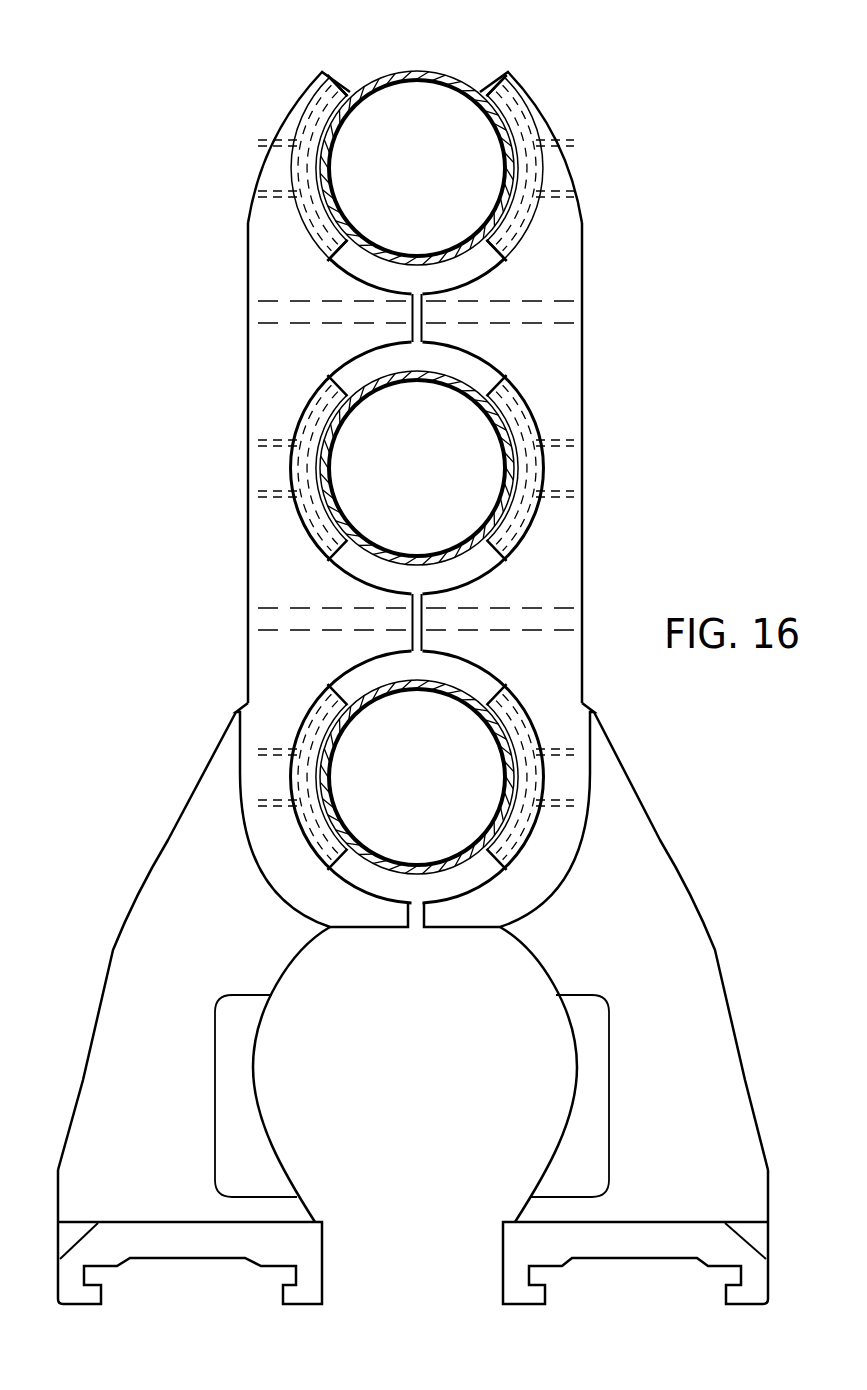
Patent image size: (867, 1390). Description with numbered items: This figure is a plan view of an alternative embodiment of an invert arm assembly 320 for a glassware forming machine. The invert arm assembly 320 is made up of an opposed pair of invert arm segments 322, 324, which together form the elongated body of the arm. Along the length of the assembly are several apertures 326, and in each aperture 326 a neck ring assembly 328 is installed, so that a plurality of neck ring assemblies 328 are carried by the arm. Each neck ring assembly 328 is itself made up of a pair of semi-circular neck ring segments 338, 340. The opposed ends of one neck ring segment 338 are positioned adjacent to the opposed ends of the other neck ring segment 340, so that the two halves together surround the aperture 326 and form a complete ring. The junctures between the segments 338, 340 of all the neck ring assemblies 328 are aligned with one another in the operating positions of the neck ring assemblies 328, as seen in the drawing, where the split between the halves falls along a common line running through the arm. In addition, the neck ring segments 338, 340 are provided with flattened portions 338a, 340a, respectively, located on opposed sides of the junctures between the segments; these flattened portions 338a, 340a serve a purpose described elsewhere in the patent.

The invert arm assembly 320 is at (672, 334).
The invert arm segment 322 is at (582, 398).
The invert arm segment 324 is at (248, 402).
The aperture 326 is at (443, 190).
The neck ring assembly 328 is at (355, 108).
The neck ring segment 338 is at (487, 84).
The flattened portion 338a is at (447, 70).
The neck ring segment 340 is at (363, 84).
The flattened portion 340a is at (405, 72).